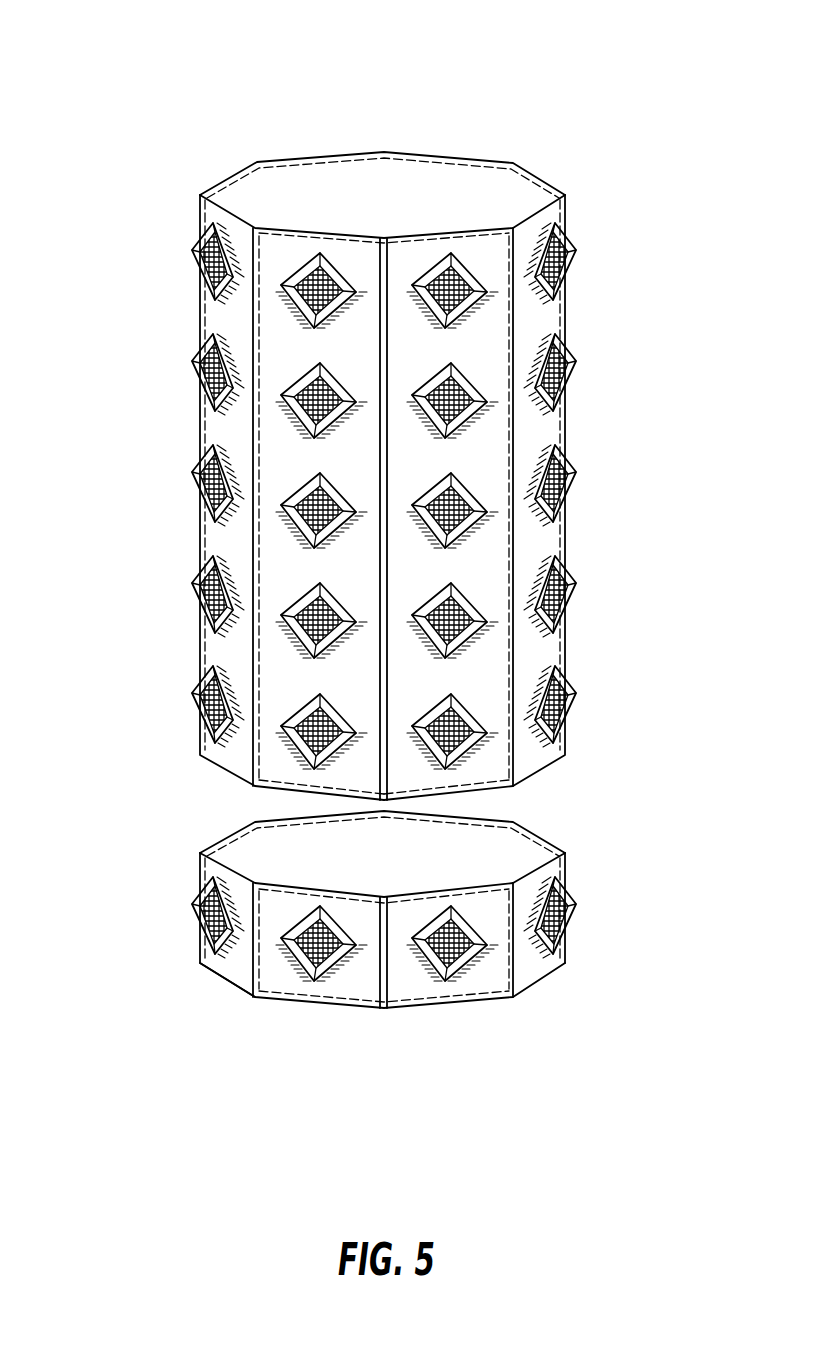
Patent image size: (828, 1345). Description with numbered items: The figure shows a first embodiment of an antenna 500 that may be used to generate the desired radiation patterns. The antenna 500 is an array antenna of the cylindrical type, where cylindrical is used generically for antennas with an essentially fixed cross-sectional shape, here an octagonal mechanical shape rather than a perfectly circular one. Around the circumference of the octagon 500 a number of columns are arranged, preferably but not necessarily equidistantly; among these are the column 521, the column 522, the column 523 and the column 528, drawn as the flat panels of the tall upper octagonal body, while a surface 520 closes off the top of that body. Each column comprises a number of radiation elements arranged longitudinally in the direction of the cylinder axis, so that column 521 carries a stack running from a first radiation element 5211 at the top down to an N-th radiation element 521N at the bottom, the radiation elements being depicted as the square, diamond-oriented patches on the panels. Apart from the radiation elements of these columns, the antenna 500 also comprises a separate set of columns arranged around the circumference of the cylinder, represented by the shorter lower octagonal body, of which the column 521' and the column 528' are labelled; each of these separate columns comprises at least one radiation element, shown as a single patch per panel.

The antenna 500 is at (171, 60).
The top face 520 is at (362, 188).
The column 521 is at (170, 476).
The radiation element 5211 is at (192, 258).
The radiation element 521N is at (170, 722).
The column 522 is at (473, 250).
The column 523 is at (550, 214).
The column 528 is at (376, 431).
The column 528' is at (323, 914).
The column 521' is at (180, 935).